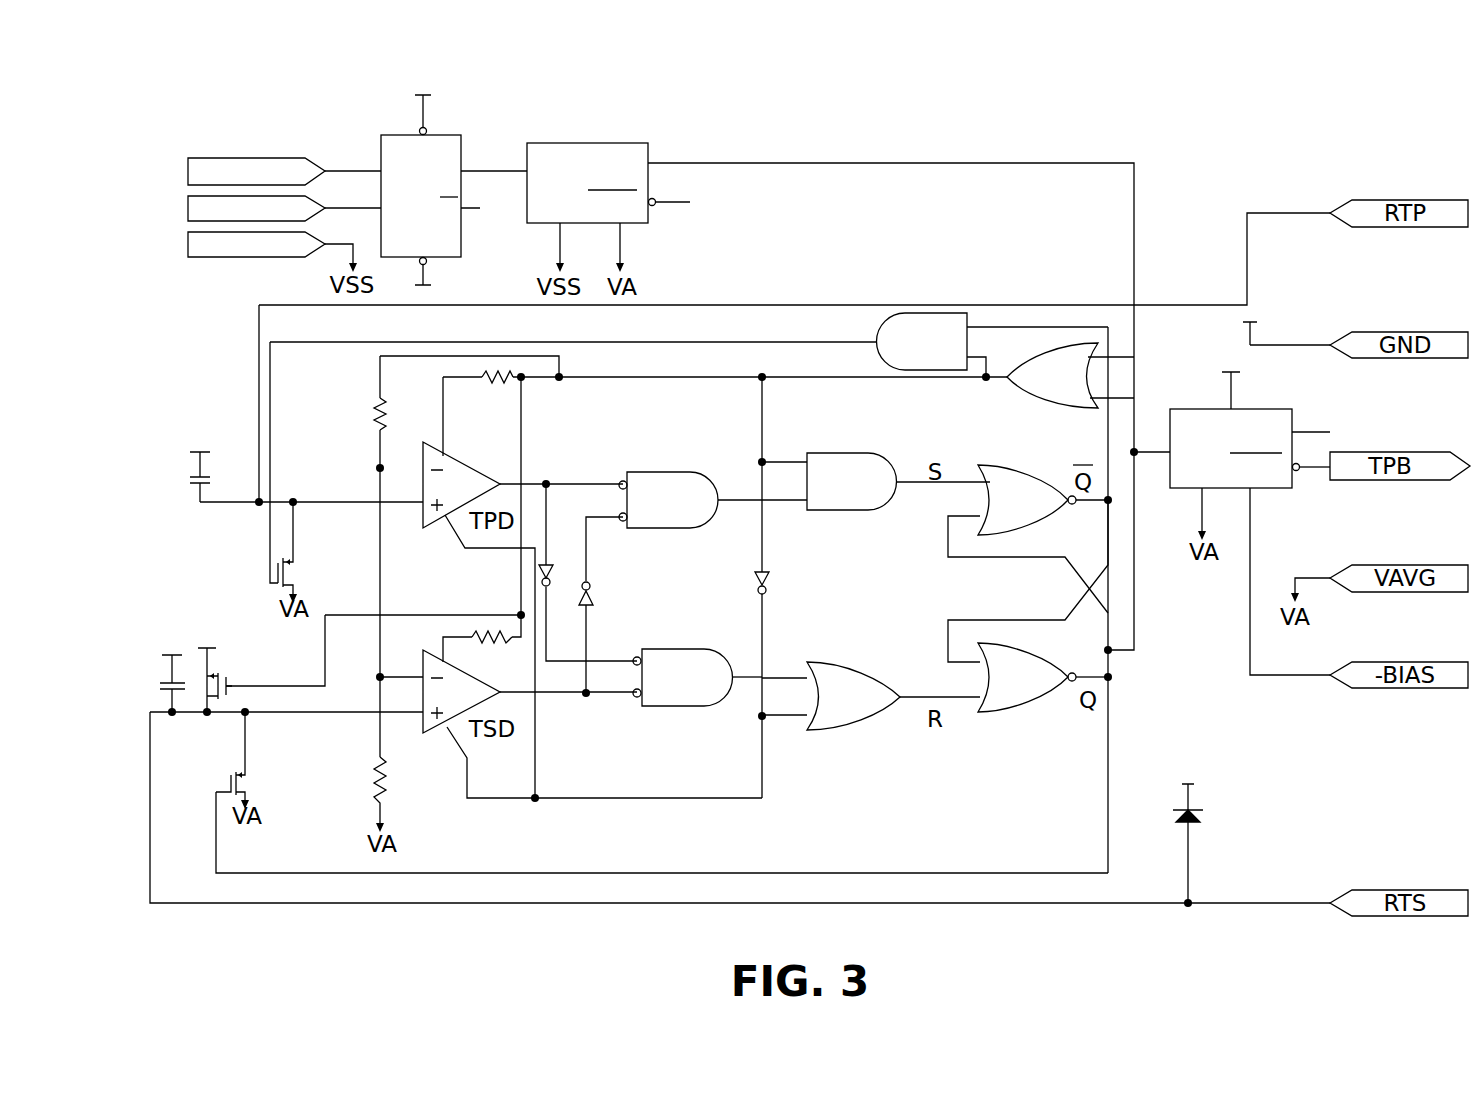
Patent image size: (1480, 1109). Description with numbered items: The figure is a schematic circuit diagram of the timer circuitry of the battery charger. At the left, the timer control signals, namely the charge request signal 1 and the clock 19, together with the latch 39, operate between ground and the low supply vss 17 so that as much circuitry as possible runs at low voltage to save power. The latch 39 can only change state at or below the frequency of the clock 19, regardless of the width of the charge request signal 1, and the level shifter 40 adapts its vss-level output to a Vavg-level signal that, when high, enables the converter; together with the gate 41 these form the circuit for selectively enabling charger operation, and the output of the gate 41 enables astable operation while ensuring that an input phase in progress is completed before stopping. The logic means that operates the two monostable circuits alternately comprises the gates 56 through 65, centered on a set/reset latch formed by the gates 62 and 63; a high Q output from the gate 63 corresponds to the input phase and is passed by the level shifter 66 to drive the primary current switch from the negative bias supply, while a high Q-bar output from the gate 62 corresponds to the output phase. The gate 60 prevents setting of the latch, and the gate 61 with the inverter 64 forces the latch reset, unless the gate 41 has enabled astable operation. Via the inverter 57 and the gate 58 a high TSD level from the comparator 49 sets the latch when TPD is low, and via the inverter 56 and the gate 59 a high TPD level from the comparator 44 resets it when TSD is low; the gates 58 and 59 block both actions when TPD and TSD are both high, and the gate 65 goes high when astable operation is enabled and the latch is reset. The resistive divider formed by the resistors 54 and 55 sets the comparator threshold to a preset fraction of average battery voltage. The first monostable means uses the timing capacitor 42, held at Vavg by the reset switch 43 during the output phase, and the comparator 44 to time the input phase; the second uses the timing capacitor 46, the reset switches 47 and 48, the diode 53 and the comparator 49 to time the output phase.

The charge request signal 1 is at (247, 160).
The clock 19 is at (188, 208).
The vss 17 is at (232, 258).
The latch 39 is at (455, 258).
The level shifter 40 is at (650, 222).
The gate 41 is at (1028, 396).
The timing capacitor 42 is at (205, 472).
The reset switch 43 is at (296, 573).
The comparator 44 is at (474, 462).
The timing capacitor 46 is at (168, 684).
The reset switch 47 is at (248, 782).
The reset switch 48 is at (228, 685).
The comparator 49 is at (452, 727).
The diode 53 is at (1190, 806).
The resistor 54 is at (376, 777).
The resistor 55 is at (378, 415).
The inverter 56 is at (550, 566).
The inverter 57 is at (592, 590).
The gate 58 is at (680, 529).
The gate 59 is at (686, 707).
The gate 60 is at (870, 510).
The gate 61 is at (838, 731).
The gate 62 is at (1045, 528).
The gate 63 is at (1004, 712).
The inverter 64 is at (767, 571).
The gate 65 is at (883, 342).
The level shifter 66 is at (1294, 488).